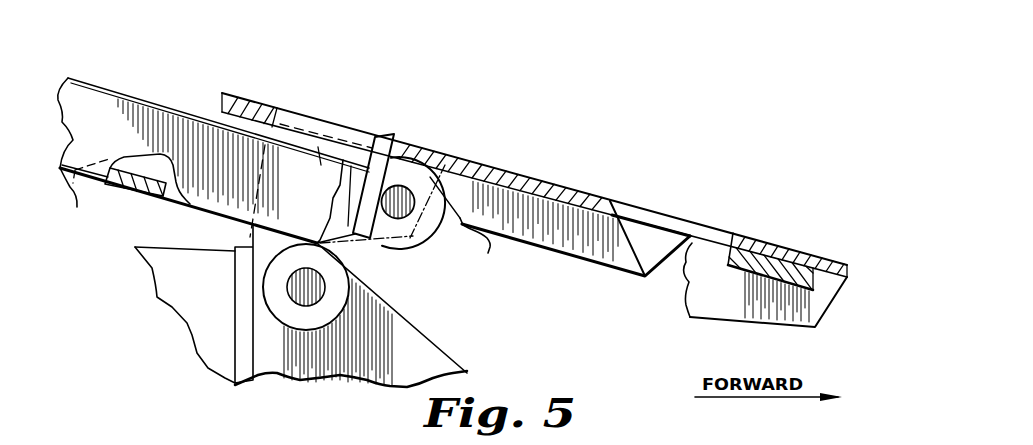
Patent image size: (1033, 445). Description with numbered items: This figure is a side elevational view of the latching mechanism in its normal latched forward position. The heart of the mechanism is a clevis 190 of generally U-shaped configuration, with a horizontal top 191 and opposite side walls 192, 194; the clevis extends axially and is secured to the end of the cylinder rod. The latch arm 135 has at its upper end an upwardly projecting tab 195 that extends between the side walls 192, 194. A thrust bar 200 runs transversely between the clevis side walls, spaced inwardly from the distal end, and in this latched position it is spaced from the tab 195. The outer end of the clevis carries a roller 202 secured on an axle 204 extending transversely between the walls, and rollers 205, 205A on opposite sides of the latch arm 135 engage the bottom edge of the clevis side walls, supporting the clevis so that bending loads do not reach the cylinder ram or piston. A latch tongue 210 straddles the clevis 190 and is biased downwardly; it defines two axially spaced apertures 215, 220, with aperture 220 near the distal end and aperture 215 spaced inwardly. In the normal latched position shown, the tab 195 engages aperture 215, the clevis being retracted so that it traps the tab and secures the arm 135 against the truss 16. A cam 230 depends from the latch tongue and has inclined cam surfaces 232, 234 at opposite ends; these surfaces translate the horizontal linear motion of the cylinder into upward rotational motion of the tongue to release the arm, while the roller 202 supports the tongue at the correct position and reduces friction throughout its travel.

The truss 16 is at (213, 314).
The latch arm 135 is at (448, 340).
The clevis 190 is at (87, 80).
The horizontal top 191 is at (150, 108).
The side wall 192 is at (121, 195).
The side wall 194 is at (150, 179).
The tab 195 is at (335, 120).
The thrust bar 200 is at (147, 192).
The roller 202 is at (392, 248).
The axle 204 is at (420, 214).
The roller 205 is at (336, 307).
The roller 205A is at (328, 314).
The latch tongue 210 is at (491, 156).
The aperture 215 is at (372, 138).
The aperture 220 is at (691, 228).
The cam 230 is at (592, 263).
The inclined cam surface 232 is at (493, 247).
The inclined cam surface 234 is at (675, 250).